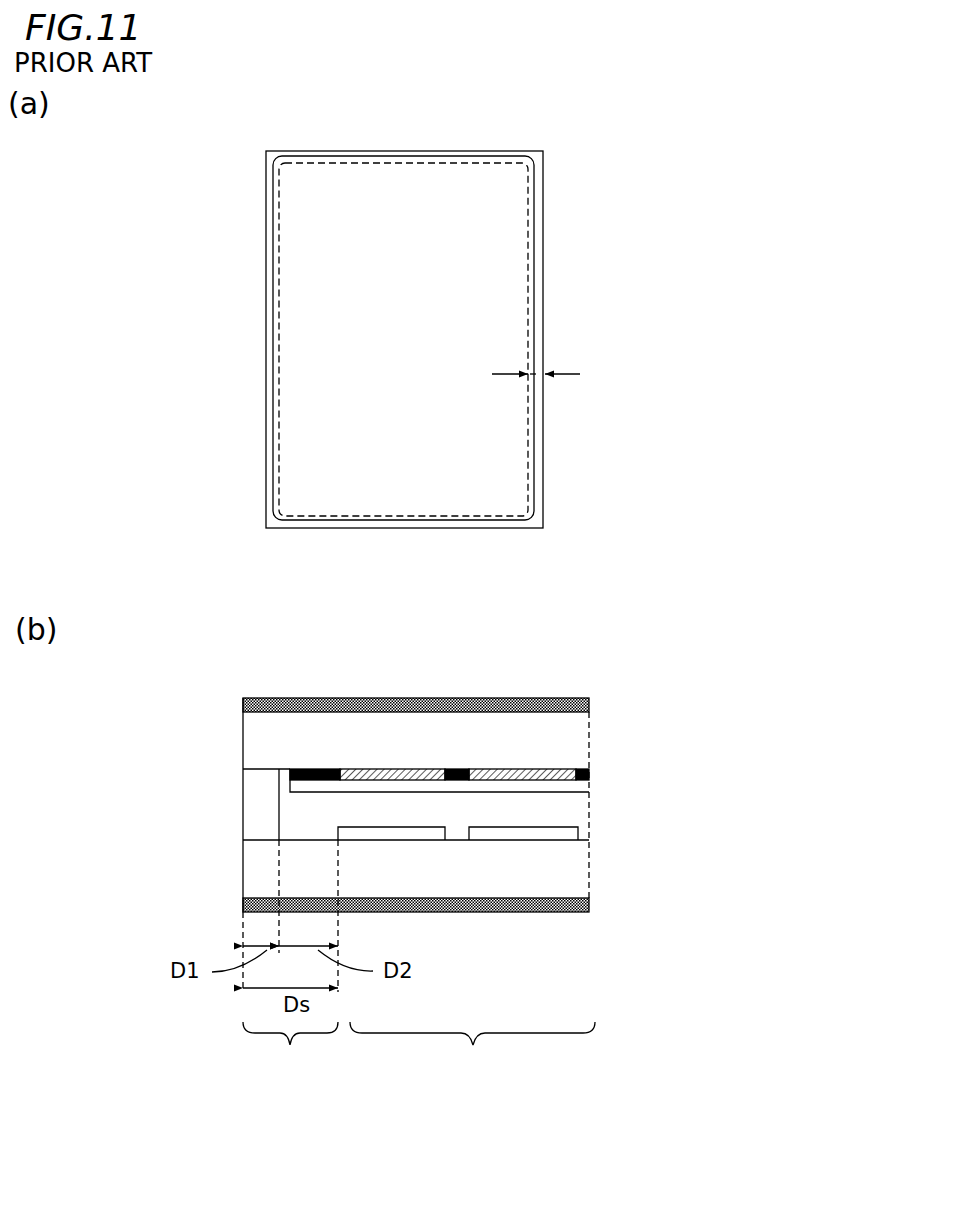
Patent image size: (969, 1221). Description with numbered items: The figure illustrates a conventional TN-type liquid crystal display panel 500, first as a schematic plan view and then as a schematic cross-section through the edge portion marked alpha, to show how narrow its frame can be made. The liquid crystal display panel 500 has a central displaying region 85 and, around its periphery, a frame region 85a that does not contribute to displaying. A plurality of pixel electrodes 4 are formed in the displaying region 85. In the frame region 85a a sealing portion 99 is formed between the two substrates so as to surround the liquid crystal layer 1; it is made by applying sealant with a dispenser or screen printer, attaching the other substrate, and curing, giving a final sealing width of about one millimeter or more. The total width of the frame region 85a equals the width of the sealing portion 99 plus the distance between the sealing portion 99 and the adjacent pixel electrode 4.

The liquid crystal display panel 500 is at (570, 121).
The displaying region 85 is at (493, 233).
The frame region 85a is at (537, 490).
The sealing portion 99 is at (252, 812).
The liquid crystal layer 1 is at (606, 795).
The pixel electrode 4 is at (562, 833).